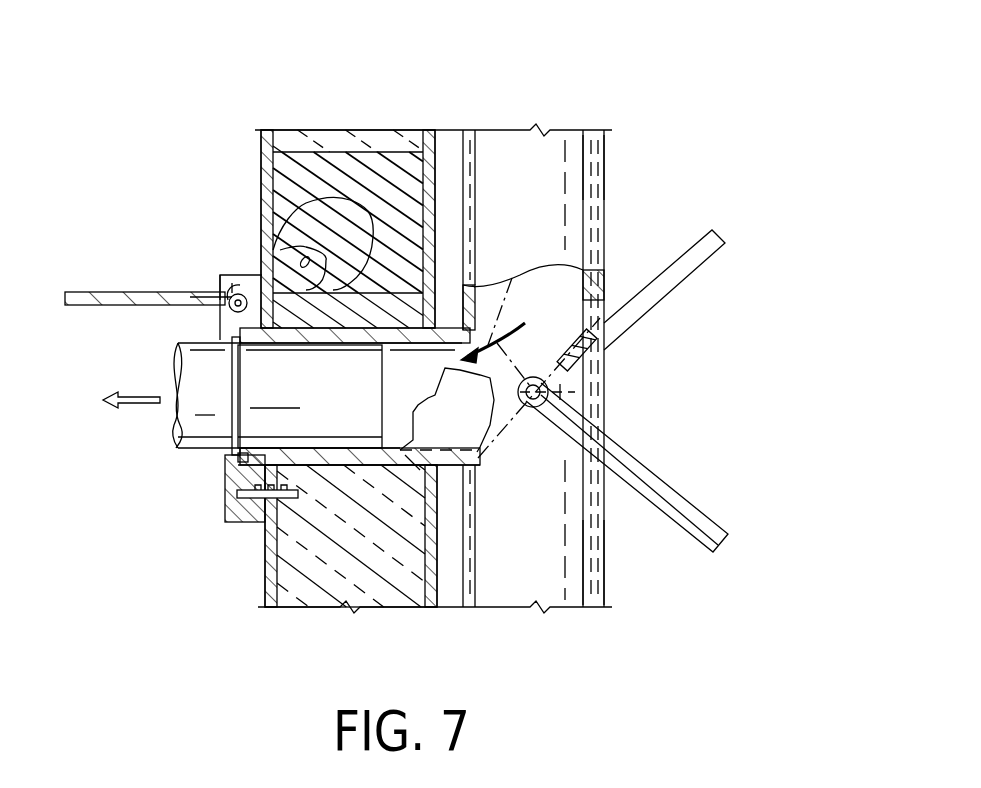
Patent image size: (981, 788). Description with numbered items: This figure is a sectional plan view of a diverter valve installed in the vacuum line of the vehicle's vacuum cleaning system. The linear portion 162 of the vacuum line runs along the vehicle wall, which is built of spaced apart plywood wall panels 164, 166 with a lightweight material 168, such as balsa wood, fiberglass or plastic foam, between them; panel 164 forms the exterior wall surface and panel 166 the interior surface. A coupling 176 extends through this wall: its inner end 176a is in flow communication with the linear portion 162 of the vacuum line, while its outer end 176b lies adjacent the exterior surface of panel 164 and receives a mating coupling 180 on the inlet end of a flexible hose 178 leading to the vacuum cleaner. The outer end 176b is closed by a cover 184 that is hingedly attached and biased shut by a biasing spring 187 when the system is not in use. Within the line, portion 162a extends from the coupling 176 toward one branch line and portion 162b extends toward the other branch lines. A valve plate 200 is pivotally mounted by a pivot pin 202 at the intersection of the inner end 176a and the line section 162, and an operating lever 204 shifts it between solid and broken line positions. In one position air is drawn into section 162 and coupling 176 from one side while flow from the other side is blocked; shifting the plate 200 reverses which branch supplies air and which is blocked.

The linear portion of the vacuum line 162 is at (606, 255).
The portion of the vacuum line 162a is at (606, 168).
The portion of the vacuum line 162b is at (606, 572).
The wall panel 164 is at (265, 160).
The wall panel 166 is at (430, 150).
The lightweight material 168 is at (330, 140).
The coupling 176 is at (232, 530).
The inner end of the coupling 176a is at (450, 460).
The outer end of the coupling 176b is at (236, 455).
The flexible hose 178 is at (173, 423).
The mating coupling 180 is at (248, 410).
The cover 184 is at (85, 291).
The biasing spring 187 is at (222, 292).
The valve plate 200 is at (512, 278).
The pivot pin 202 is at (560, 392).
The operating lever 204 is at (705, 268).